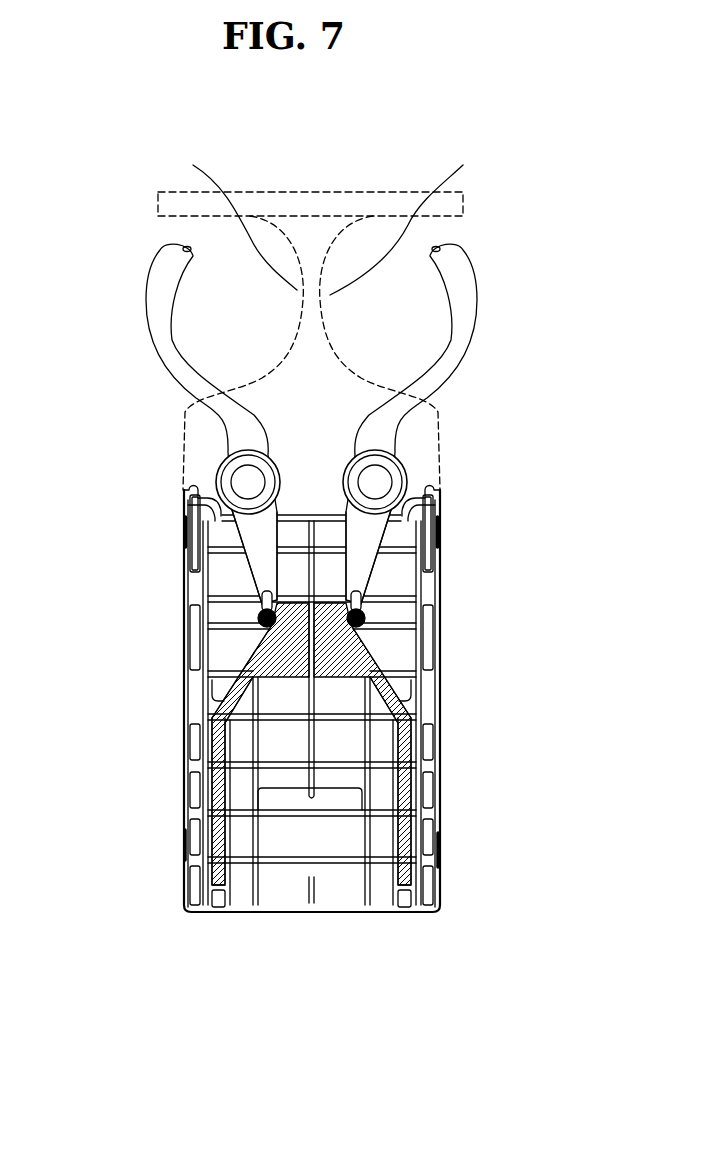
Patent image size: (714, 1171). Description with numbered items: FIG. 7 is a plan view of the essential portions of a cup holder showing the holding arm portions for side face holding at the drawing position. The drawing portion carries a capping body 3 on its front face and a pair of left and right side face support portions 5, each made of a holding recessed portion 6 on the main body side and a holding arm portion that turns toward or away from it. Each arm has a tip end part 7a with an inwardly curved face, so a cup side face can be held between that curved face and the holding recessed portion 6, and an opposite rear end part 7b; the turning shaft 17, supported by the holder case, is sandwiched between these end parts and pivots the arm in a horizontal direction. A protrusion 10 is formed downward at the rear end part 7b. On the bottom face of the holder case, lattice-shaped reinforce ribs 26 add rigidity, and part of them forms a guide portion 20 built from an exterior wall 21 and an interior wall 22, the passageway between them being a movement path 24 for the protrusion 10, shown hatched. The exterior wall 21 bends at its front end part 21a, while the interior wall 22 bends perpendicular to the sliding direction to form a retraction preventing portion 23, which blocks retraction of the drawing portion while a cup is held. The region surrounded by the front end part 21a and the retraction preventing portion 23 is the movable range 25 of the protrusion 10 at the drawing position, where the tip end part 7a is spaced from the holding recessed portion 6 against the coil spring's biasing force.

The capping body 3 is at (327, 225).
The side face support portion 5 is at (233, 323).
The holding recessed portion 6 is at (331, 222).
The tip end part 7a is at (160, 290).
The rear end part 7b is at (258, 563).
The protrusion 10 is at (262, 618).
The turning shaft 17 is at (246, 480).
The guide portion 20 is at (84, 822).
The exterior wall 21 is at (212, 807).
The front end part 21a is at (328, 597).
The interior wall 22 is at (217, 853).
The retraction preventing portion 23 is at (305, 668).
The movement path 24 is at (410, 702).
The movable range 25 is at (260, 645).
The reinforce ribs 26 is at (363, 842).